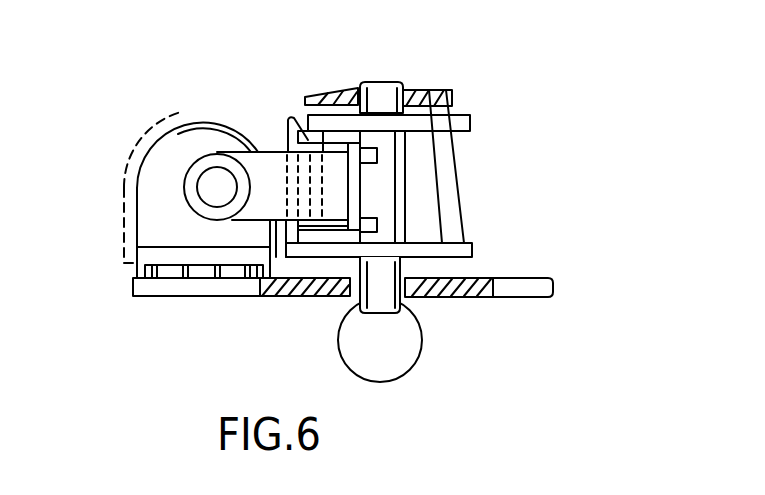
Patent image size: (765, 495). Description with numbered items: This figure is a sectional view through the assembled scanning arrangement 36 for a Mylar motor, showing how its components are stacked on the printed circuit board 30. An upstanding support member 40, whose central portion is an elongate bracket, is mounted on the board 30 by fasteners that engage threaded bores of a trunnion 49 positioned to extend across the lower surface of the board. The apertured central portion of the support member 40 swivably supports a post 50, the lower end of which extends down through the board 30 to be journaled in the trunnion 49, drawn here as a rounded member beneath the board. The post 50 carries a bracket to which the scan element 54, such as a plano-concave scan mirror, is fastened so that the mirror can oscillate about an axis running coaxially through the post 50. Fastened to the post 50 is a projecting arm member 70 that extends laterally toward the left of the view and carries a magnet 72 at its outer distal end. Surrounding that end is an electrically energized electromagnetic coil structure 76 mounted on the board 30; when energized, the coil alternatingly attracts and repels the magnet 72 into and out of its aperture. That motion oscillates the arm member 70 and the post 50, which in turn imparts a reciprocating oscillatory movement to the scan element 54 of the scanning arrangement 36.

The scanning arrangement 36 is at (238, 71).
The electromagnetic coil structure 76 is at (133, 157).
The magnet 72 is at (210, 197).
The arm member 70 is at (263, 225).
The post 50 is at (400, 83).
The scan element 54 is at (450, 150).
The support member 40 is at (340, 193).
The printed circuit board 30 is at (521, 276).
The trunnion 49 is at (413, 367).